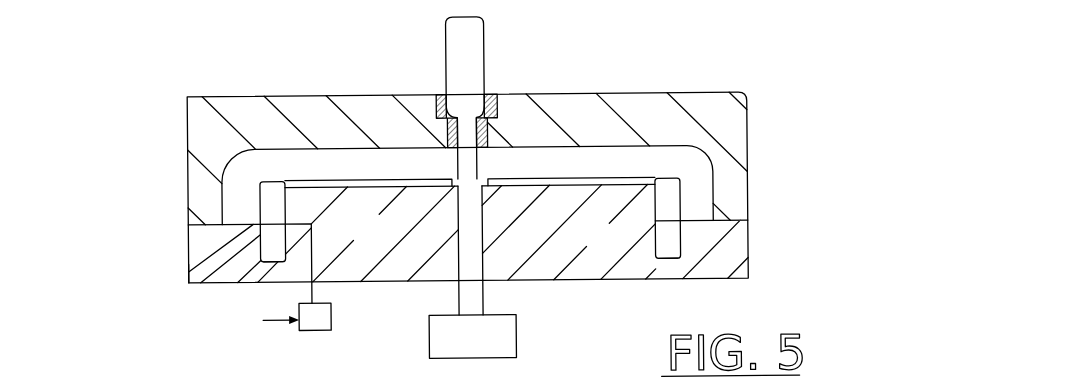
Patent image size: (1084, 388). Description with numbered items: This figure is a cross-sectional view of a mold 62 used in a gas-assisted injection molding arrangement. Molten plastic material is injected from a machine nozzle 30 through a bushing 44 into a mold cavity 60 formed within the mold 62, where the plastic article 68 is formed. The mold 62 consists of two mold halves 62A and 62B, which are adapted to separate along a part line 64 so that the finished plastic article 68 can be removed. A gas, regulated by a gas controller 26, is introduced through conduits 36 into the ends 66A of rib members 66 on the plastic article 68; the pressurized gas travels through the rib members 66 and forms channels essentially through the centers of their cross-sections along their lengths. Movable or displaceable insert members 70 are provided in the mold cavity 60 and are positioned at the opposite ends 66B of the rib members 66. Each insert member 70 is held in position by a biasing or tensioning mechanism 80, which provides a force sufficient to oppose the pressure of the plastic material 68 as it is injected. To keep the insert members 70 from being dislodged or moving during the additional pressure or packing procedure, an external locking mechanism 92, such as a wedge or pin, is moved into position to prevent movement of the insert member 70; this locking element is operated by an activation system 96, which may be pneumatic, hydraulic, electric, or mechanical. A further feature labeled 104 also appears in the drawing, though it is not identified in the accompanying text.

The gas controller 26 is at (508, 333).
The machine nozzle 30 is at (477, 35).
The conduits 36 is at (460, 297).
The bushing 44 is at (492, 96).
The mold cavity 60 is at (622, 150).
The mold 62 is at (181, 145).
The mold half 62A is at (310, 99).
The mold half 62B is at (205, 240).
The part line 64 is at (737, 230).
The rib members 66 is at (375, 189).
The ends of rib members 66A is at (503, 173).
The opposite ends of rib members 66B is at (290, 180).
The plastic article 68 is at (583, 158).
The insert members 70 is at (267, 205).
The biasing mechanism 80 is at (262, 261).
The external locking mechanism 92 is at (263, 321).
The activation system 96 is at (330, 313).
The port 104 is at (190, 268).